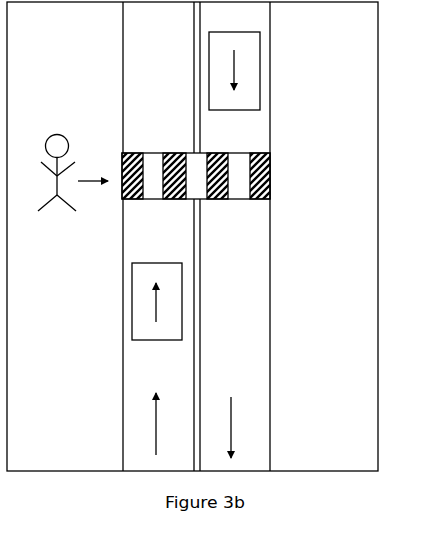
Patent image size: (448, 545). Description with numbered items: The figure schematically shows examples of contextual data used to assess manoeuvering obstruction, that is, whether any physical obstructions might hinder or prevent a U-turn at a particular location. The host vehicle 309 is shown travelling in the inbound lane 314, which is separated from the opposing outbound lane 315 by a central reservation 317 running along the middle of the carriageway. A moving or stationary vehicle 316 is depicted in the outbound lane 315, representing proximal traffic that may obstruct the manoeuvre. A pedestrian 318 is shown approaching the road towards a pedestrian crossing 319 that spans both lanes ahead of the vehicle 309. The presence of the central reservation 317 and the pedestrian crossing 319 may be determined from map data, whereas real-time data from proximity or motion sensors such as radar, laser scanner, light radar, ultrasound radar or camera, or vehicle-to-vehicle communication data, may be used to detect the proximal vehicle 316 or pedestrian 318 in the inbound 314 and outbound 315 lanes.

The vehicle 309 is at (148, 302).
The inbound lane 314 is at (156, 421).
The outbound lane 315 is at (232, 419).
The moving or stationary vehicle 316 is at (249, 71).
The central reservation 317 is at (198, 353).
The pedestrian 318 is at (55, 143).
The pedestrian crossing 319 is at (267, 172).